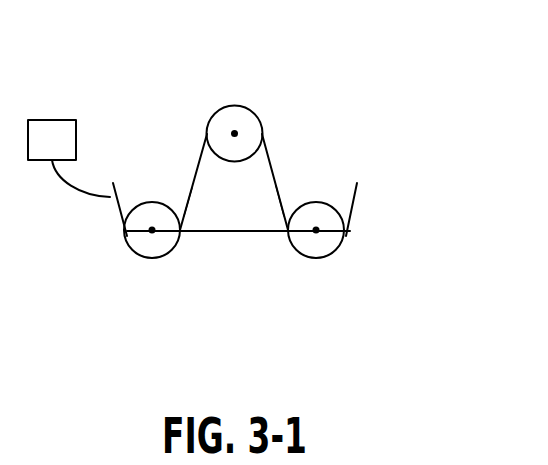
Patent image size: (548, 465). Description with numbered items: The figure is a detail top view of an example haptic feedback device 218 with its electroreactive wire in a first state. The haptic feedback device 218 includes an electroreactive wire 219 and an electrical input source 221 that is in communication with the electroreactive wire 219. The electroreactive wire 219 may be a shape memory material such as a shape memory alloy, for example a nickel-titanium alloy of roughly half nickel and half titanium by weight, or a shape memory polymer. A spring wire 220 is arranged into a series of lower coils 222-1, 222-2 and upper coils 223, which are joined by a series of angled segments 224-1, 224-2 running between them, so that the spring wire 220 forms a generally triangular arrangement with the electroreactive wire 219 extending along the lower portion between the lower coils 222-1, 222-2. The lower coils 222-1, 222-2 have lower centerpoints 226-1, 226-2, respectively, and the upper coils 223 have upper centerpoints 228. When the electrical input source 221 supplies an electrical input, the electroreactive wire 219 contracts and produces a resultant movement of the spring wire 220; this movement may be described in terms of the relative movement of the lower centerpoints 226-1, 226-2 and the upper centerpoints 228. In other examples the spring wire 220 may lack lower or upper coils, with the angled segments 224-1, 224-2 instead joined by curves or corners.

The haptic feedback device 218 is at (466, 40).
The electroreactive wire 219 is at (233, 232).
The spring wire 220 is at (338, 120).
The electrical input source 221 is at (50, 119).
The lower coil 222-1 is at (137, 258).
The lower coil 222-2 is at (317, 258).
The upper coils 223 is at (234, 105).
The angled segment 224-1 is at (197, 177).
The angled segment 224-2 is at (282, 197).
The lower centerpoint 226-1 is at (152, 230).
The lower centerpoint 226-2 is at (316, 230).
The upper centerpoint 228 is at (235, 134).